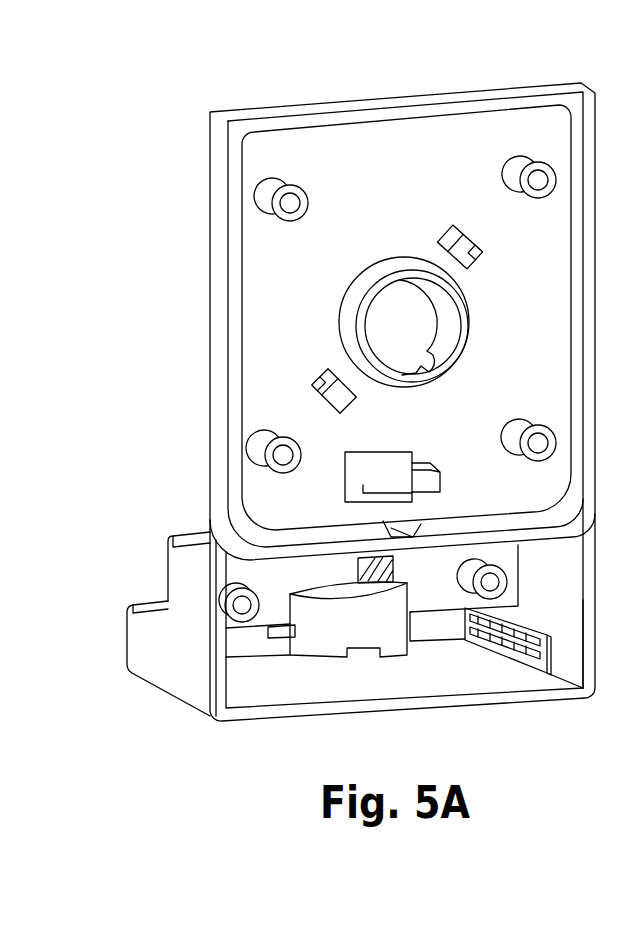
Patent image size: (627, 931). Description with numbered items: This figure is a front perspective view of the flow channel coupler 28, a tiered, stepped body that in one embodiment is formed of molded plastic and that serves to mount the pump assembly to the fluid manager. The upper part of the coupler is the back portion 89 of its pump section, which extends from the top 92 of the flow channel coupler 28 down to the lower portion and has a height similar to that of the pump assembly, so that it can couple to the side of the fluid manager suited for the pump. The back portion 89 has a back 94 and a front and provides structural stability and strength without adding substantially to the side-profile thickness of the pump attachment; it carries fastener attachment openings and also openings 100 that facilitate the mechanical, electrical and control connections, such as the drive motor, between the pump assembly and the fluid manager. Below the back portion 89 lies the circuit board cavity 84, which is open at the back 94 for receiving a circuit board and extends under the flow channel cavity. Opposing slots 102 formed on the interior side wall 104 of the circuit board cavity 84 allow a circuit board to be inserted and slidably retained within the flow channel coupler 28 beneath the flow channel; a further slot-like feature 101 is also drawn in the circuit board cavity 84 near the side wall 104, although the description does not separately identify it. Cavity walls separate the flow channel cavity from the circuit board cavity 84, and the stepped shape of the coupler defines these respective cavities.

The flow channel coupler 28 is at (208, 238).
The top 92 is at (519, 83).
The back portion 89 is at (262, 306).
The back 94 is at (262, 366).
The openings 100 is at (384, 335).
The circuit board cavity 84 is at (347, 681).
The slots 102 is at (285, 640).
The slot 101 is at (533, 645).
The interior side wall 104 is at (569, 642).